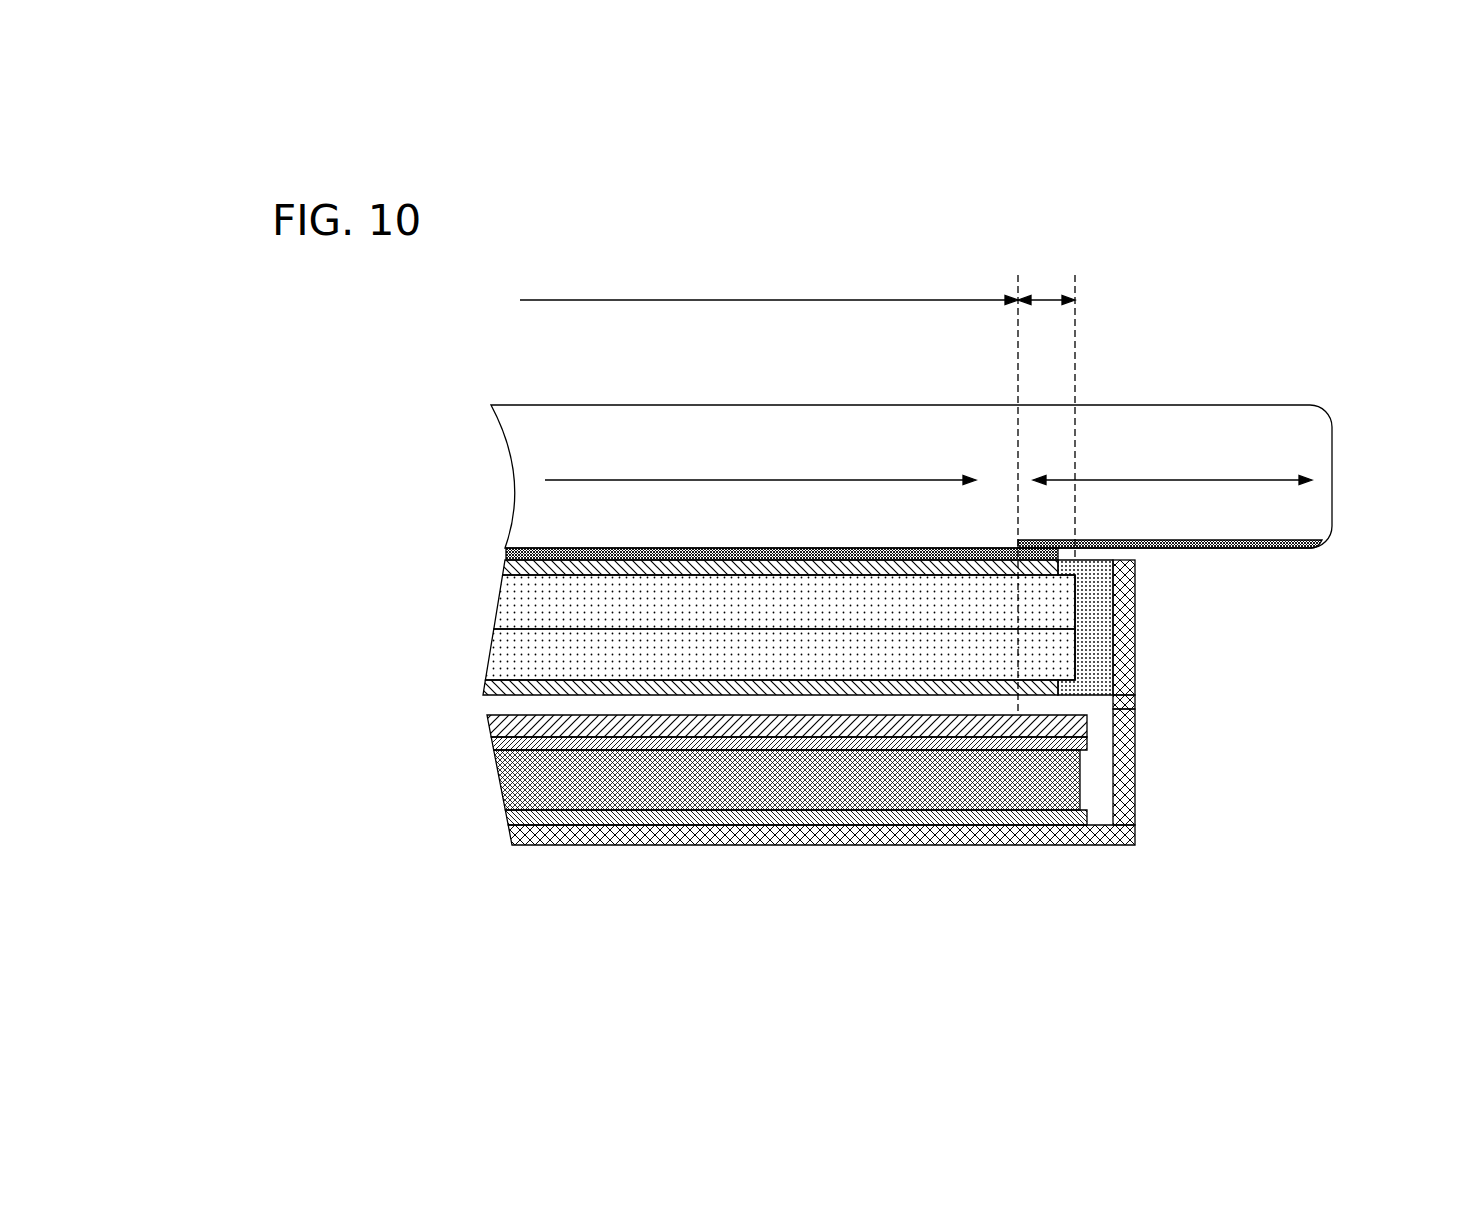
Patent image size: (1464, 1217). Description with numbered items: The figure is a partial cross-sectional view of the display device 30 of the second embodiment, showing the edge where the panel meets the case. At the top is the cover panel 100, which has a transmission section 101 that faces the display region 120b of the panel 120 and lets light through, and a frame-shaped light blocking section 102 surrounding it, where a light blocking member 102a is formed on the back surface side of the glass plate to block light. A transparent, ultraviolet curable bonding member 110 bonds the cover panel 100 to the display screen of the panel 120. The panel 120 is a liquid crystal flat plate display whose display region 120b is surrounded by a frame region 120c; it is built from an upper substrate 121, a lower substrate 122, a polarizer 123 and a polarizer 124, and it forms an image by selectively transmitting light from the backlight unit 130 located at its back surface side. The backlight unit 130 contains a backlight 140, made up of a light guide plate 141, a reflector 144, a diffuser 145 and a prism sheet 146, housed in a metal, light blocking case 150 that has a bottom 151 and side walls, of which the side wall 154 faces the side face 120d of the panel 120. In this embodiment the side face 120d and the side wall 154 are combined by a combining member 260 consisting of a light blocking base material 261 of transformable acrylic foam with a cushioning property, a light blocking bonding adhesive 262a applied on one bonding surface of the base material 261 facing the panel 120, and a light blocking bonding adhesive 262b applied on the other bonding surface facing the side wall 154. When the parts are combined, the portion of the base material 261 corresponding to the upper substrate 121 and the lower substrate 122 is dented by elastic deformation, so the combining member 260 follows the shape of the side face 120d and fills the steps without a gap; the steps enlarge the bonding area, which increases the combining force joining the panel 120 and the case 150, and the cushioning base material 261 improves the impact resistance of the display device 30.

The display device 30 is at (977, 205).
The cover panel 100 is at (527, 405).
The transmission section 101 is at (742, 478).
The light blocking section 102 is at (1178, 480).
The light blocking member 102a is at (1275, 540).
The bonding member 110 is at (656, 548).
The panel 120 is at (483, 695).
The display region 120b is at (624, 300).
The frame region 120c is at (1043, 300).
The side face 120d is at (1137, 565).
The upper substrate 121 is at (550, 605).
The lower substrate 122 is at (545, 655).
The polarizer 123 is at (505, 562).
The polarizer 124 is at (485, 685).
The backlight unit 130 is at (512, 840).
The backlight 140 is at (506, 822).
The light guide plate 141 is at (762, 775).
The reflector 144 is at (886, 818).
The diffuser 145 is at (645, 745).
The prism sheet 146 is at (568, 722).
The case 150 is at (1002, 830).
The bottom 151 is at (1100, 845).
The side wall 154 is at (1137, 823).
The combining member 260 is at (1325, 590).
The base material 261 is at (1133, 640).
The bonding adhesive 262a is at (1108, 618).
The bonding adhesive 262b is at (1132, 698).